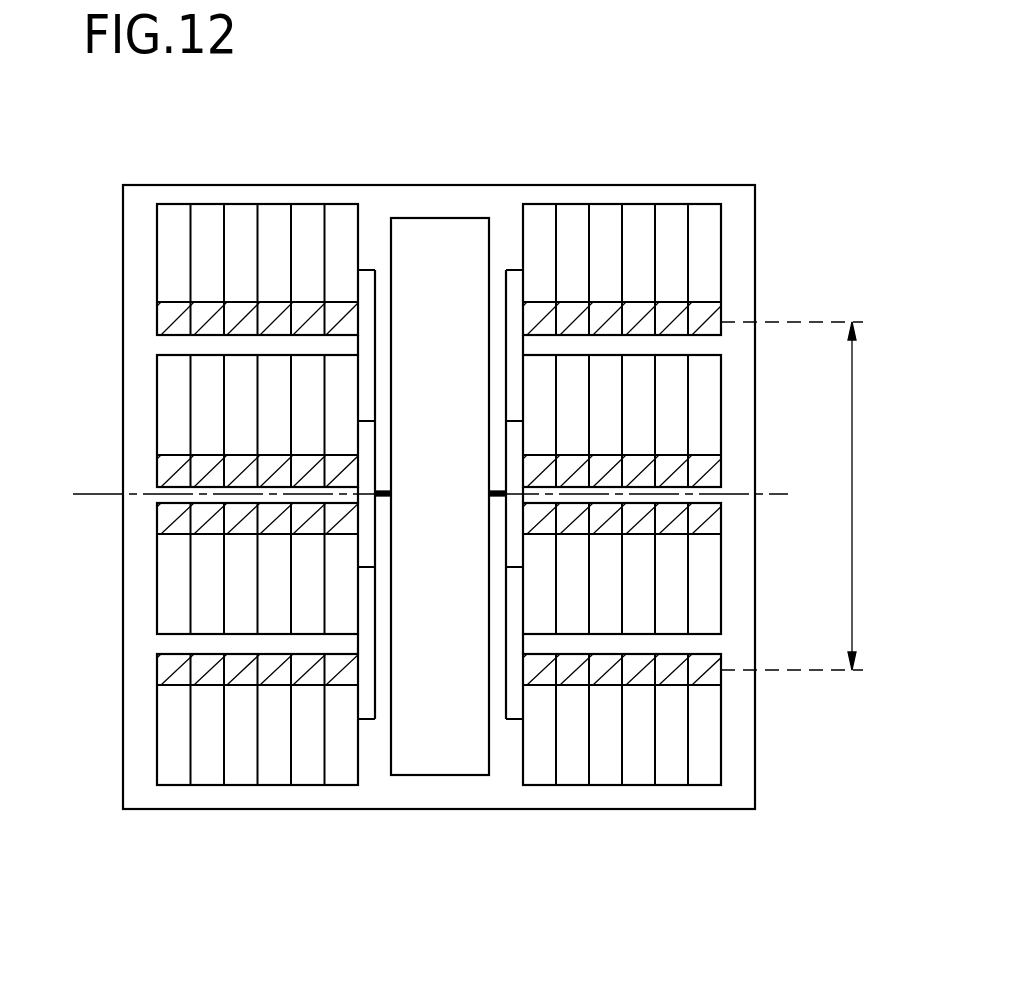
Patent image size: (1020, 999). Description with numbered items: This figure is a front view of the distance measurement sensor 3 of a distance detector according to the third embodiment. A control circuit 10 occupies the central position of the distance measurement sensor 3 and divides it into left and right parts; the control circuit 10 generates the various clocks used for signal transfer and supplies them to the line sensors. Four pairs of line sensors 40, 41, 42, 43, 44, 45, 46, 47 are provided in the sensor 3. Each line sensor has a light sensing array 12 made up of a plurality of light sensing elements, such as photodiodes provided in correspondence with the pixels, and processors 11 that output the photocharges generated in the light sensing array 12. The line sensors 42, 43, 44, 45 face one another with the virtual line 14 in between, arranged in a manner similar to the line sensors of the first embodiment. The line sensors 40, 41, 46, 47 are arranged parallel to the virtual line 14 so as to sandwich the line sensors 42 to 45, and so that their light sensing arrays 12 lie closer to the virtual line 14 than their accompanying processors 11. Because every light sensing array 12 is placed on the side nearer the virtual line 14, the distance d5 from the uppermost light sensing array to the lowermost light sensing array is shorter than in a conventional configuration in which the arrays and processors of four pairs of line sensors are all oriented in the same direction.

The distance measurement sensor 3 is at (500, 203).
The control circuit 10 is at (448, 775).
The processors 11 is at (170, 237).
The light sensing array 12 is at (157, 320).
The virtual line 14 is at (84, 490).
The line sensor 40 is at (455, 457).
The line sensor 41 is at (636, 204).
The line sensor 42 is at (157, 396).
The line sensor 43 is at (710, 398).
The line sensor 44 is at (157, 580).
The line sensor 45 is at (721, 572).
The line sensor 46 is at (247, 785).
The line sensor 47 is at (644, 785).
The distance d5 is at (809, 496).